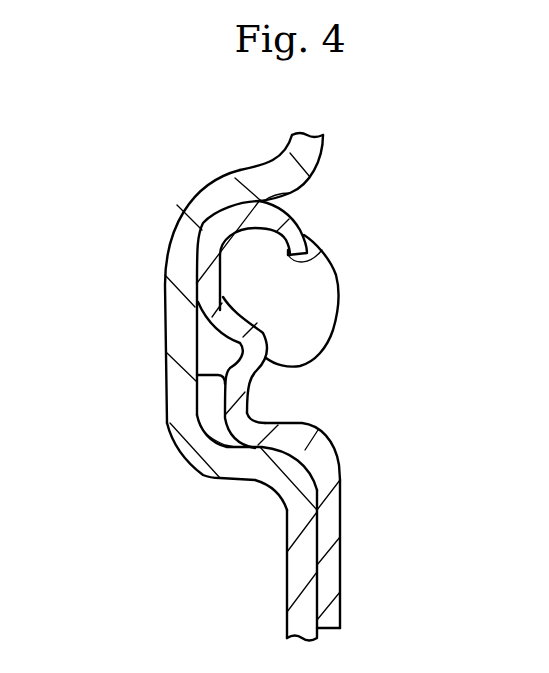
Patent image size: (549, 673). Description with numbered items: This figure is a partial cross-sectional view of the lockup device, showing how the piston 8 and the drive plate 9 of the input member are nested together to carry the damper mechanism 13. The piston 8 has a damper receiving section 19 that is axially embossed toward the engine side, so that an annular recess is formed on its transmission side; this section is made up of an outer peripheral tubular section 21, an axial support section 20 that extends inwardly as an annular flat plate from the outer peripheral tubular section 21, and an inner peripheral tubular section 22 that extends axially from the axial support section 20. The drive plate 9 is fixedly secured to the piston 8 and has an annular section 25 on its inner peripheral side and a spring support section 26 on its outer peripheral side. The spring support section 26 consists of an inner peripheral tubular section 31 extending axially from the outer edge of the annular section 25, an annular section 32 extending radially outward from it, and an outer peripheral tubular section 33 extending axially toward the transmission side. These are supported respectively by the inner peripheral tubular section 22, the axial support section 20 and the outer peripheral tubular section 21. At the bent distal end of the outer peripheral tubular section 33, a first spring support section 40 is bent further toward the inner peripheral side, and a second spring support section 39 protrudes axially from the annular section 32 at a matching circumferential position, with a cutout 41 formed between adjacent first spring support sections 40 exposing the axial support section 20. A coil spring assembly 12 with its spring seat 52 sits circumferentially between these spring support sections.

The piston 8 is at (180, 167).
The drive plate 9 is at (348, 433).
The coil spring assembly 12 is at (353, 270).
The damper mechanism 13 is at (402, 197).
The damper receiving section 19 is at (120, 330).
The axial support section 20 is at (180, 313).
The outer peripheral tubular section 21 is at (258, 182).
The inner peripheral tubular section 22 is at (237, 468).
The annular section 25 is at (333, 558).
The spring support section 26 is at (310, 370).
The inner peripheral tubular section 31 is at (258, 428).
The annular section 32 is at (197, 258).
The outer peripheral tubular section 33 is at (262, 202).
The second spring support section 39 is at (257, 343).
The first spring support section 40 is at (328, 262).
The cutout 41 is at (207, 355).
The spring seat 52 is at (292, 298).